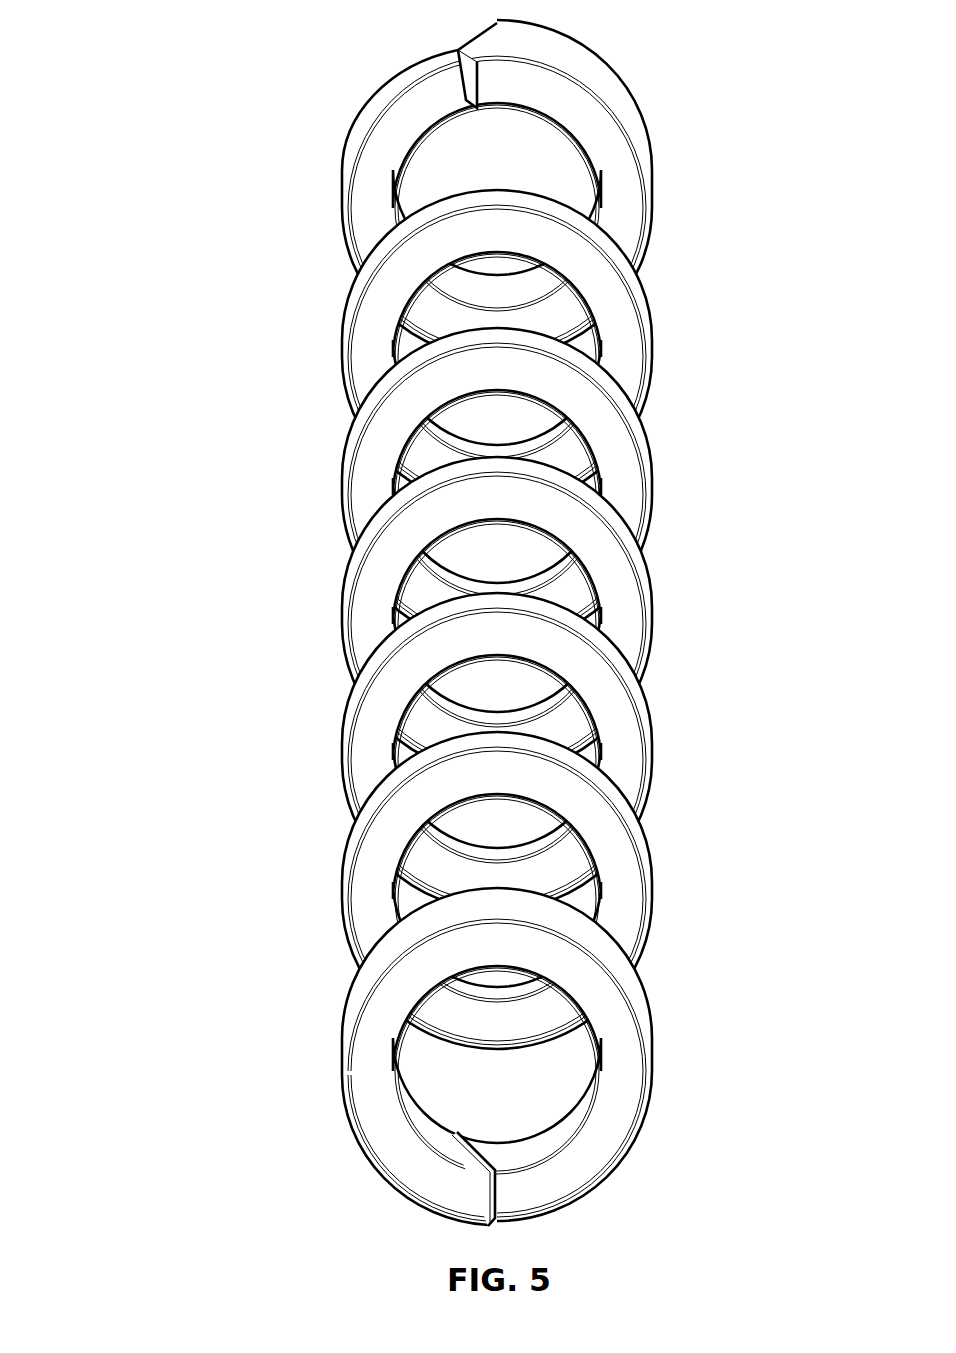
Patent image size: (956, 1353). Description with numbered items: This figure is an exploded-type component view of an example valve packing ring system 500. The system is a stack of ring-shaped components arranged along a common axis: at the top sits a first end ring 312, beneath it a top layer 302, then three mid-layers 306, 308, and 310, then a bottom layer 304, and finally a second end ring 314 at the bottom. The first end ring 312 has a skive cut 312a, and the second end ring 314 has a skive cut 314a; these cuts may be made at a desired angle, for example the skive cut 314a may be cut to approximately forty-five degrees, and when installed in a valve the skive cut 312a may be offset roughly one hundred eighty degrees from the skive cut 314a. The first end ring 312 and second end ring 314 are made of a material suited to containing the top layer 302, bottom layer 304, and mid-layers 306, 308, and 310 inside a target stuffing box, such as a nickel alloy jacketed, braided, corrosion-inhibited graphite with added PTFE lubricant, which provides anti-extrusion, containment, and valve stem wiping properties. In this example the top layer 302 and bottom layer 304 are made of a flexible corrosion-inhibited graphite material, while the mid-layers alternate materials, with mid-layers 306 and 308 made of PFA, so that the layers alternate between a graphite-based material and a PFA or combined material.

The valve packing ring system 500 is at (435, 618).
The first end ring 312 is at (578, 179).
The skive cut 312a is at (488, 22).
The top layer 302 is at (655, 350).
The mid layer 306 is at (655, 485).
The mid layer 308 is at (655, 620).
The mid layer 310 is at (655, 755).
The bottom layer 304 is at (655, 890).
The second end ring 314 is at (578, 1062).
The skive cut 314a is at (591, 1184).